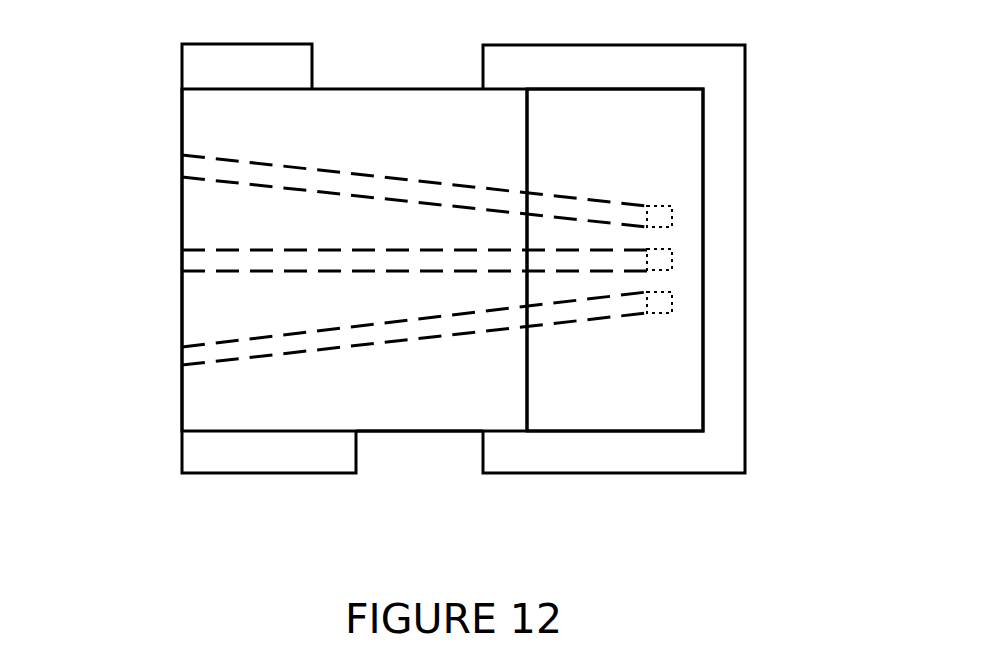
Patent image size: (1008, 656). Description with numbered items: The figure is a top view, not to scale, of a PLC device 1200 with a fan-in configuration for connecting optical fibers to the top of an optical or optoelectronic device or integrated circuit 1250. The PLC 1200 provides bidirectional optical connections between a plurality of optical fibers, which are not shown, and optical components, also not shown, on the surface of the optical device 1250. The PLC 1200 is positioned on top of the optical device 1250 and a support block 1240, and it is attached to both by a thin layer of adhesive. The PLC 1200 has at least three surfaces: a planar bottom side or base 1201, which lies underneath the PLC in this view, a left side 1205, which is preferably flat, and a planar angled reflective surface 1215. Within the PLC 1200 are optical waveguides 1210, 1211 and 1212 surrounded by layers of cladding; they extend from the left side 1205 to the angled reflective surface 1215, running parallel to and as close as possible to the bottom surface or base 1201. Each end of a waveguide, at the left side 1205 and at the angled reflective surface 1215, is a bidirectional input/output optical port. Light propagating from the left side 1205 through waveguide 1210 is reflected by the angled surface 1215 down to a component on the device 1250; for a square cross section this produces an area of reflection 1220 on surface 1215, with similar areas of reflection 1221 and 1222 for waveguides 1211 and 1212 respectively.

The PLC device 1200 is at (386, 406).
The planar bottom side or base 1201 is at (418, 431).
The left side 1205 is at (182, 408).
The optical waveguide 1210 is at (195, 355).
The optical waveguide 1211 is at (193, 260).
The optical waveguide 1212 is at (197, 163).
The planar angled reflective surface 1215 is at (637, 405).
The area of reflection 1220 is at (672, 307).
The area of reflection 1221 is at (672, 265).
The area of reflection 1222 is at (672, 213).
The support block 1240 is at (230, 474).
The optical or optoelectronic device or integrated circuit 1250 is at (582, 474).